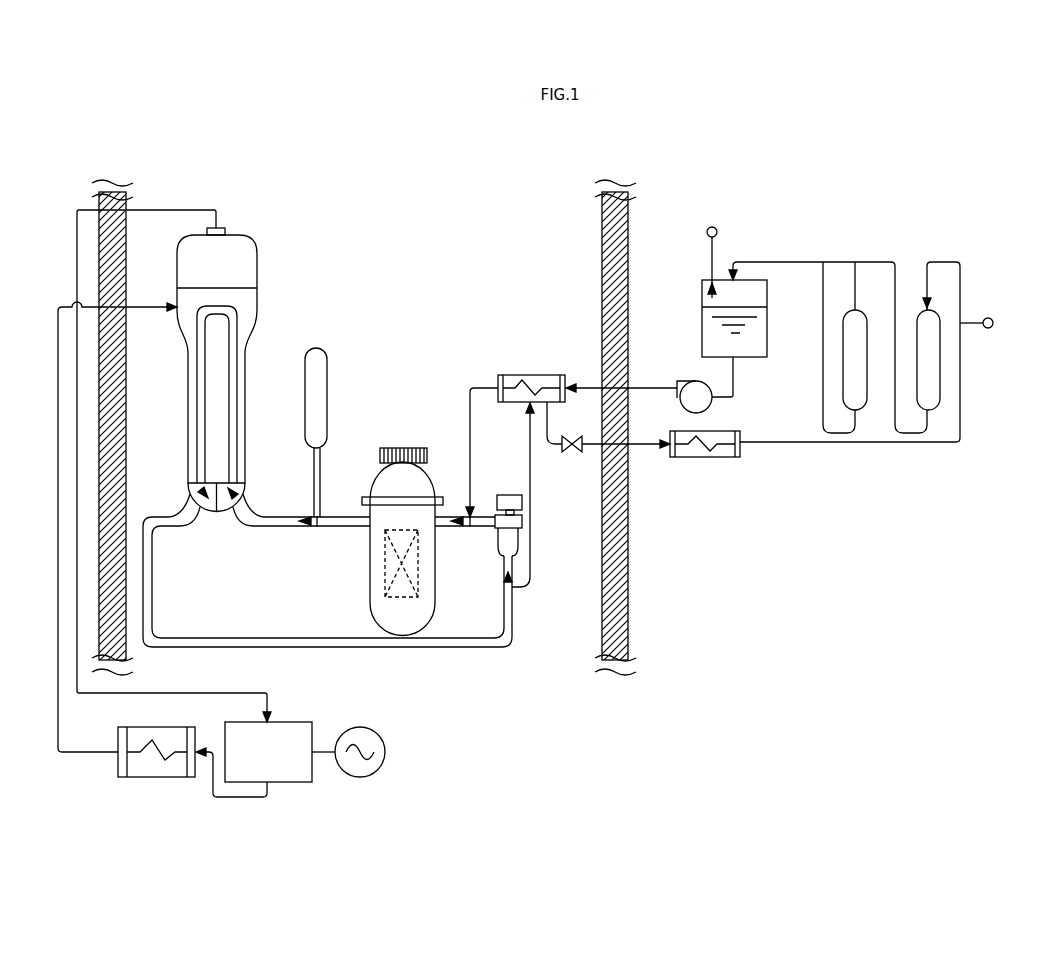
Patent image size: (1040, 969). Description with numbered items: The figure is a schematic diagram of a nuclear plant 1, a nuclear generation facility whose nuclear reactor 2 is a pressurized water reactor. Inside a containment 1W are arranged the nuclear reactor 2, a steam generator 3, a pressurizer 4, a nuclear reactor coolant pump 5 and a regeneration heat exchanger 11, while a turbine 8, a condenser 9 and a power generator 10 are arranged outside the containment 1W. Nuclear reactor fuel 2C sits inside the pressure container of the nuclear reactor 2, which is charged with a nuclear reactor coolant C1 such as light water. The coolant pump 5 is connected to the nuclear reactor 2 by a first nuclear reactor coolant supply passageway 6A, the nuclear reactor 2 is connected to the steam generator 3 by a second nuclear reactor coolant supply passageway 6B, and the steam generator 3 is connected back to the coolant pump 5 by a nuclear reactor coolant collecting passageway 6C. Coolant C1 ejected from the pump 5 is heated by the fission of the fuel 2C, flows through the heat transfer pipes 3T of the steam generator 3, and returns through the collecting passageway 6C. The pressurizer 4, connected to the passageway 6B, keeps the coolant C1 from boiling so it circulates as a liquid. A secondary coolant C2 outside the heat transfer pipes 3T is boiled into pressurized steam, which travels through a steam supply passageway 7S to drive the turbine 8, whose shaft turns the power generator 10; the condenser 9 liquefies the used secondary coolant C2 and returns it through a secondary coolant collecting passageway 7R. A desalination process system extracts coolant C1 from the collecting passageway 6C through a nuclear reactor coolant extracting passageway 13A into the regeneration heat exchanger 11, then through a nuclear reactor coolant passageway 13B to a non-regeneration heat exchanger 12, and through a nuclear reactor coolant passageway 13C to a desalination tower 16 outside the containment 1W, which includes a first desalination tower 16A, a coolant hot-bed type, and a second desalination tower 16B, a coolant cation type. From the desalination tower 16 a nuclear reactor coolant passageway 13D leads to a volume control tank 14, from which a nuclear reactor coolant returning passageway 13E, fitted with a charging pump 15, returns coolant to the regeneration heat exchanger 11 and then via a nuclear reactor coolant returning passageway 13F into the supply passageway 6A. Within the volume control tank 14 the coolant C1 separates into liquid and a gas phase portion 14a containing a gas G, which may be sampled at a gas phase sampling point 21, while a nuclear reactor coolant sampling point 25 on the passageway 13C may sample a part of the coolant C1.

The nuclear plant 1 is at (77, 118).
The containment 1W is at (126, 381).
The nuclear reactor 2 is at (389, 519).
The nuclear reactor fuel 2C is at (385, 573).
The steam generator 3 is at (238, 352).
The heat transfer pipe 3T is at (237, 338).
The secondary coolant C2 is at (259, 298).
The pressurizer 4 is at (314, 347).
The nuclear reactor coolant pump 5 is at (504, 541).
The first nuclear reactor coolant supply passageway 6A is at (495, 515).
The second nuclear reactor coolant supply passageway 6B is at (300, 517).
The nuclear reactor coolant collecting passageway 6C is at (152, 556).
The nuclear reactor coolant C1 is at (200, 494).
The steam supply passageway 7S is at (172, 210).
The secondary coolant collecting passageway 7R is at (89, 752).
The turbine 8 is at (292, 783).
The condenser 9 is at (157, 778).
The power generator 10 is at (361, 778).
The regeneration heat exchanger 11 is at (527, 375).
The non-regeneration heat exchanger 12 is at (707, 460).
The nuclear reactor coolant extracting passageway 13A is at (532, 536).
The nuclear reactor coolant passageway 13B is at (556, 422).
The nuclear reactor coolant passageway 13C is at (815, 446).
The nuclear reactor coolant passageway 13D is at (796, 262).
The nuclear reactor coolant returning passageway 13E is at (585, 385).
The nuclear reactor coolant returning passageway 13F is at (468, 396).
The volume control tank 14 is at (756, 310).
The gas phase portion 14a is at (752, 287).
The gas G is at (705, 300).
The charging pump 15 is at (710, 408).
The desalination tower 16 is at (857, 396).
The first desalination tower 16A is at (855, 490).
The second desalination tower 16B is at (860, 412).
The gas phase sampling point 21 is at (718, 233).
The nuclear reactor coolant sampling point 25 is at (988, 329).